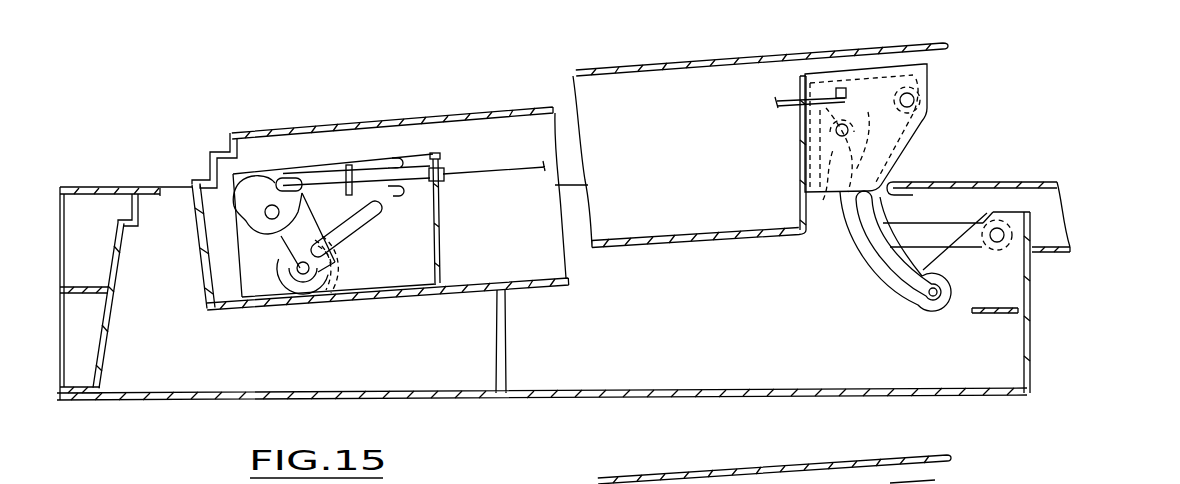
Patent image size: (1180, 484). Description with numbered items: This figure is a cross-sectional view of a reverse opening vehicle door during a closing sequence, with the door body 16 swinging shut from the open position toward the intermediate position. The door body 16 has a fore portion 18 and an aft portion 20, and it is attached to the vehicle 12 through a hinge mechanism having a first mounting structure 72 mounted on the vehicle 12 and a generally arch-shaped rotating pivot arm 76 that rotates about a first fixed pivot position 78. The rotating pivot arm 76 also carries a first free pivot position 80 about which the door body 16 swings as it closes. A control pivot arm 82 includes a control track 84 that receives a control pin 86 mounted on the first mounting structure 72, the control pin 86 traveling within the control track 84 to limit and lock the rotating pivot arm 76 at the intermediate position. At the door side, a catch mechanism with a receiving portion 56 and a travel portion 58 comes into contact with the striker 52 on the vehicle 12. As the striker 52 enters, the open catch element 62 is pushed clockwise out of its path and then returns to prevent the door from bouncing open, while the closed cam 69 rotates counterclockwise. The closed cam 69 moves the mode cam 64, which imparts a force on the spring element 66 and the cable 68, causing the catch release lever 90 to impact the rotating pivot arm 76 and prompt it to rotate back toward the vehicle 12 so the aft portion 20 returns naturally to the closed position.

The vehicle 12 is at (548, 402).
The door body 16 is at (507, 107).
The fore portion 18 is at (212, 152).
The aft portion 20 is at (855, 47).
The striker 52 is at (293, 296).
The receiving portion 56 is at (322, 292).
The travel portion 58 is at (379, 208).
The open catch element 62 is at (263, 245).
The mode cam 64 is at (257, 183).
The spring element 66 is at (369, 166).
The cable 68 is at (502, 170).
The closed cam 69 is at (340, 249).
The first mounting structure 72 is at (1010, 285).
The rotating pivot arm 76 is at (933, 233).
The first fixed pivot position 78 is at (1010, 233).
The first free pivot position 80 is at (933, 83).
The control pivot arm 82 is at (868, 273).
The control track 84 is at (900, 285).
The control pin 86 is at (924, 306).
The catch release lever 90 is at (823, 200).